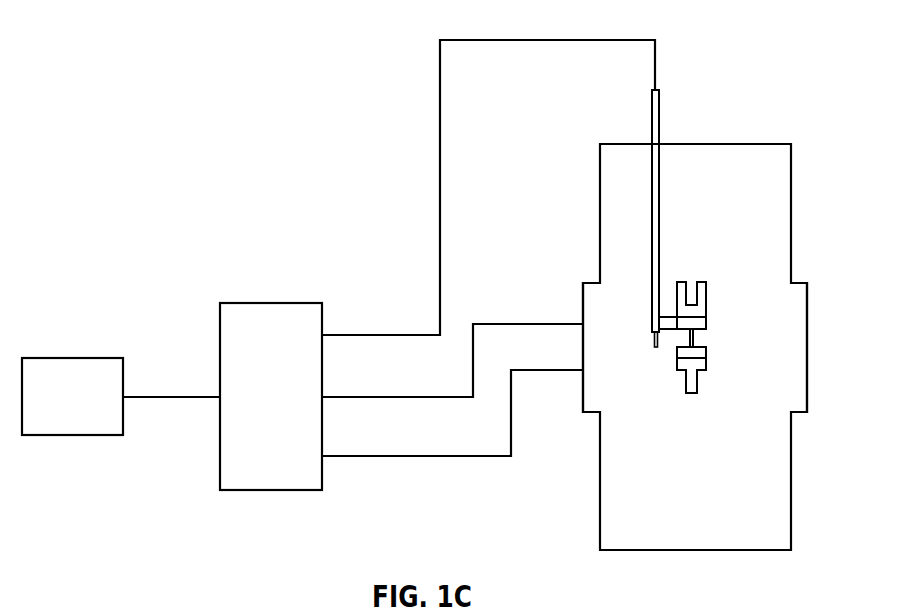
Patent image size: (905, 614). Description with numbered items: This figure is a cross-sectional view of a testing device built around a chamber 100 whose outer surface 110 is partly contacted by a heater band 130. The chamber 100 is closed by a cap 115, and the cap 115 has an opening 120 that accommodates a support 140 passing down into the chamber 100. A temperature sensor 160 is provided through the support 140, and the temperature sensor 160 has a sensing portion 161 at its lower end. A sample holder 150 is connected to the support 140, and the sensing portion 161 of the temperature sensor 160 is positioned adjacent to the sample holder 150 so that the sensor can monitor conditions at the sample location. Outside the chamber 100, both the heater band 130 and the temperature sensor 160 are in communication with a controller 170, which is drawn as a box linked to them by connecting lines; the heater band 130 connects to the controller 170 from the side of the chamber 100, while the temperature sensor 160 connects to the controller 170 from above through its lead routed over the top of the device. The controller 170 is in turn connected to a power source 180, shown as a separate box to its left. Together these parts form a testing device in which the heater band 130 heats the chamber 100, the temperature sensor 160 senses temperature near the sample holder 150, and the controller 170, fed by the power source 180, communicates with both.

The chamber 100 is at (799, 42).
The outer surface 110 is at (792, 217).
The cap 115 is at (762, 143).
The opening 120 is at (651, 142).
The heater band 130 is at (588, 310).
The support 140 is at (659, 115).
The sample holder 150 is at (707, 370).
The temperature sensor 160 is at (439, 95).
The sensing portion 161 is at (652, 340).
The controller 170 is at (293, 410).
The power source 180 is at (95, 410).